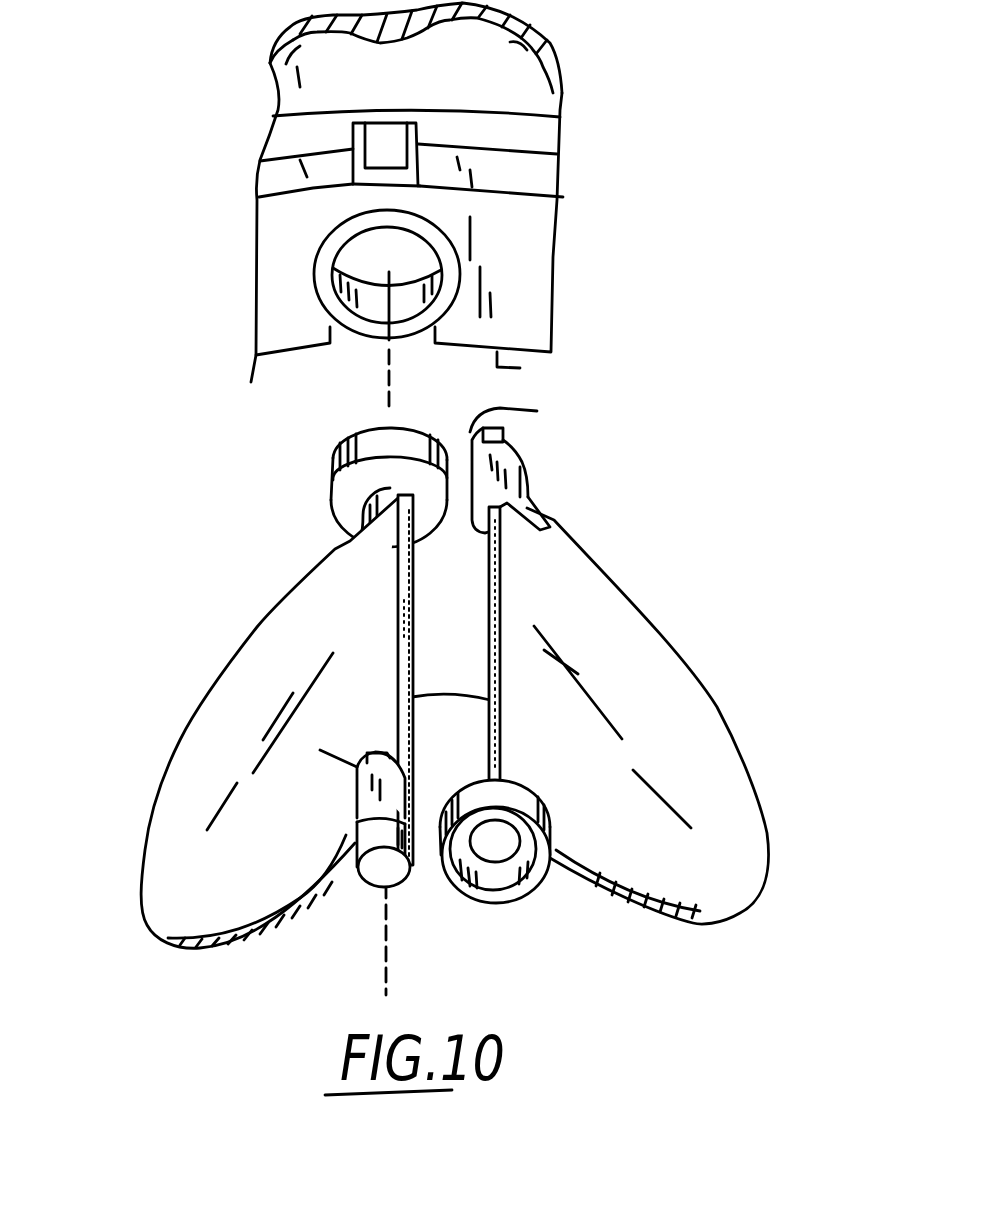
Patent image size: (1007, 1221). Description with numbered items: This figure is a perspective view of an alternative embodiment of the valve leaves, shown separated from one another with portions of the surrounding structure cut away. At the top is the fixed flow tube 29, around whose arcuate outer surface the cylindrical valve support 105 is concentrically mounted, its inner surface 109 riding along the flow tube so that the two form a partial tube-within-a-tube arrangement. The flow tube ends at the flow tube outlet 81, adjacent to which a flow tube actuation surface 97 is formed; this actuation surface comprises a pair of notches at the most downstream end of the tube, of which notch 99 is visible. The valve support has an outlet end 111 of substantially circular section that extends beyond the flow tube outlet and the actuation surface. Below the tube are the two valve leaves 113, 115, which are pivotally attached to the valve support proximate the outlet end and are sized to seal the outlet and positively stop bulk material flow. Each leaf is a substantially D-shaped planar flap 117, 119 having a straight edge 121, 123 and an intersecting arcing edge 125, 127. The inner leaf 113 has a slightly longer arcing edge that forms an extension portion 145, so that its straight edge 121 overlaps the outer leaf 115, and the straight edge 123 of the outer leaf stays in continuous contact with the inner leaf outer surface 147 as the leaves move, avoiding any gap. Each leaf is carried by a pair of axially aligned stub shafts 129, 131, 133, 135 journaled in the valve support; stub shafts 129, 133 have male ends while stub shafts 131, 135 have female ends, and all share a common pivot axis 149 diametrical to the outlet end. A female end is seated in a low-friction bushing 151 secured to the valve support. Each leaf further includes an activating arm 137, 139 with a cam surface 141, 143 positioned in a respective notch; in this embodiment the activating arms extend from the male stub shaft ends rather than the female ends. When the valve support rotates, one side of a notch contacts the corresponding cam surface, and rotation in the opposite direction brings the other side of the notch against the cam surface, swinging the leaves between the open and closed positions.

The flow tube 29 is at (530, 80).
The flow tube outlet 81 is at (538, 198).
The flow tube actuation surface 97 is at (394, 142).
The notch 99 is at (358, 195).
The valve support 105 is at (290, 14).
The inner surface 109 is at (530, 52).
The outlet end 111 is at (538, 371).
The valve leaf 113 is at (200, 687).
The valve leaf 115 is at (745, 708).
The planar flap 117 is at (199, 850).
The planar flap 119 is at (694, 821).
The straight edge 121 is at (490, 700).
The straight edge 123 is at (474, 604).
The arcing edge 125 is at (165, 946).
The arcing edge 127 is at (766, 858).
The stub shaft 129 is at (367, 890).
The stub shaft 131 is at (333, 467).
The stub shaft 133 is at (528, 470).
The stub shaft 135 is at (507, 903).
The activating arm 137 is at (350, 803).
The activating arm 139 is at (528, 492).
The cam surface 141 is at (392, 756).
The cam surface 143 is at (505, 437).
The extension portion 145 is at (397, 567).
The outer surface 147 is at (449, 651).
The pivot axis 149 is at (388, 413).
The bushing 151 is at (313, 280).